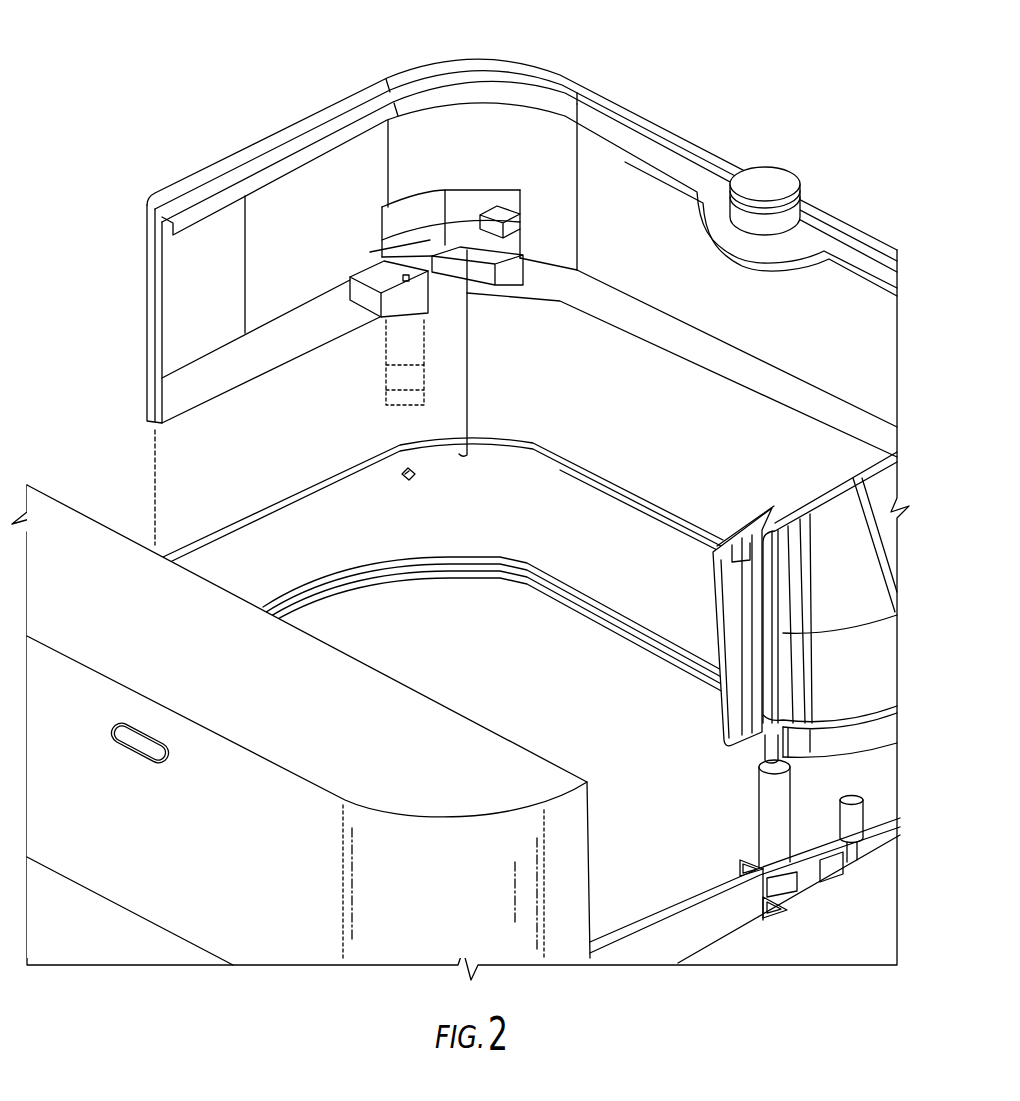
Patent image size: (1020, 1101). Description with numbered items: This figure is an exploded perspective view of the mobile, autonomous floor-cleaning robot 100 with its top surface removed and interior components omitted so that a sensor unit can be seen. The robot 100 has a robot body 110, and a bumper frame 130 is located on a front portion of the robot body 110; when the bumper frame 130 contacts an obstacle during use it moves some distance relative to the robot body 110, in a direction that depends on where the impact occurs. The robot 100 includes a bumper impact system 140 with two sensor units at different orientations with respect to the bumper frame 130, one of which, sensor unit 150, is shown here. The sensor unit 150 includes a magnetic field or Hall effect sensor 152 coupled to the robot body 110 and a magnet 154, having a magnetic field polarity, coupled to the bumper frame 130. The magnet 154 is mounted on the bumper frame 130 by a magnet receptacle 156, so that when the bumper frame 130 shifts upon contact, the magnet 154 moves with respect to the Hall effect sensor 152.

The floor-cleaning robot 100 is at (672, 92).
The robot body 110 is at (523, 453).
The bumper frame 130 is at (458, 77).
The bumper impact system 140 is at (369, 87).
The sensor unit 150 is at (468, 358).
The Hall effect sensor 152 is at (405, 468).
The magnet 154 is at (405, 377).
The magnet receptacle 156 is at (394, 276).